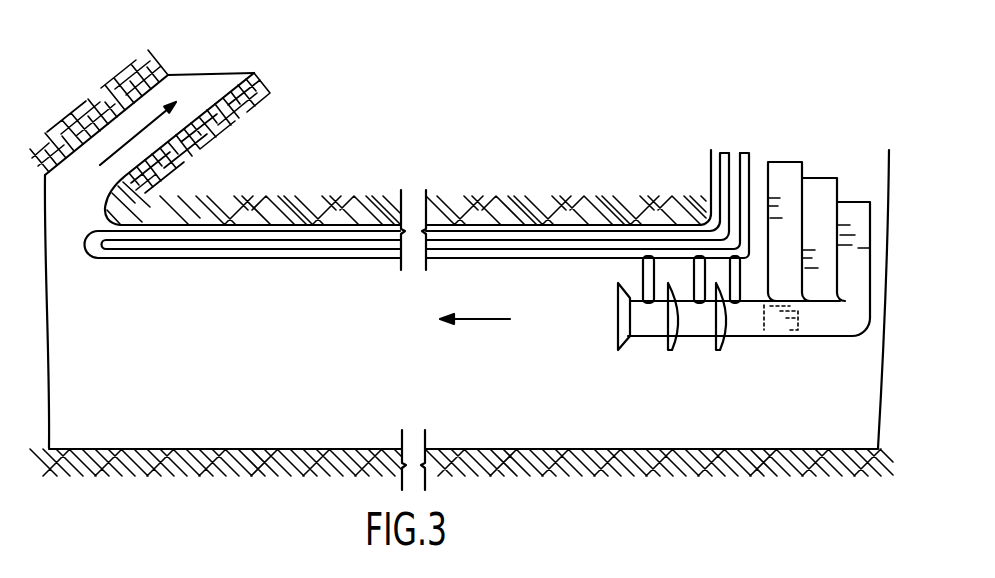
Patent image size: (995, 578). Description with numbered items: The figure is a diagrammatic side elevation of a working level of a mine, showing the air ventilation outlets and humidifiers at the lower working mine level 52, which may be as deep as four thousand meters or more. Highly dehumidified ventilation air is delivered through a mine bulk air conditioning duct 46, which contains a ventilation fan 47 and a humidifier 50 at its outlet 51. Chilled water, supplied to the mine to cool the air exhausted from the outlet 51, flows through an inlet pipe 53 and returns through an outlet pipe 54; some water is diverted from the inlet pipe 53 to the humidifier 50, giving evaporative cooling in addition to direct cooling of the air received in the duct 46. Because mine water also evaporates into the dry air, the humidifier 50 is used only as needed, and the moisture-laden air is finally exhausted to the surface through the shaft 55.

The mine bulk air conditioning duct 46 is at (857, 202).
The ventilation fan 47 is at (795, 337).
The humidifier 50 is at (650, 326).
The outlet 51 is at (618, 295).
The lower working mine level 52 is at (492, 399).
The inlet pipe 53 is at (746, 152).
The outlet pipe 54 is at (722, 152).
The shaft 55 is at (209, 80).